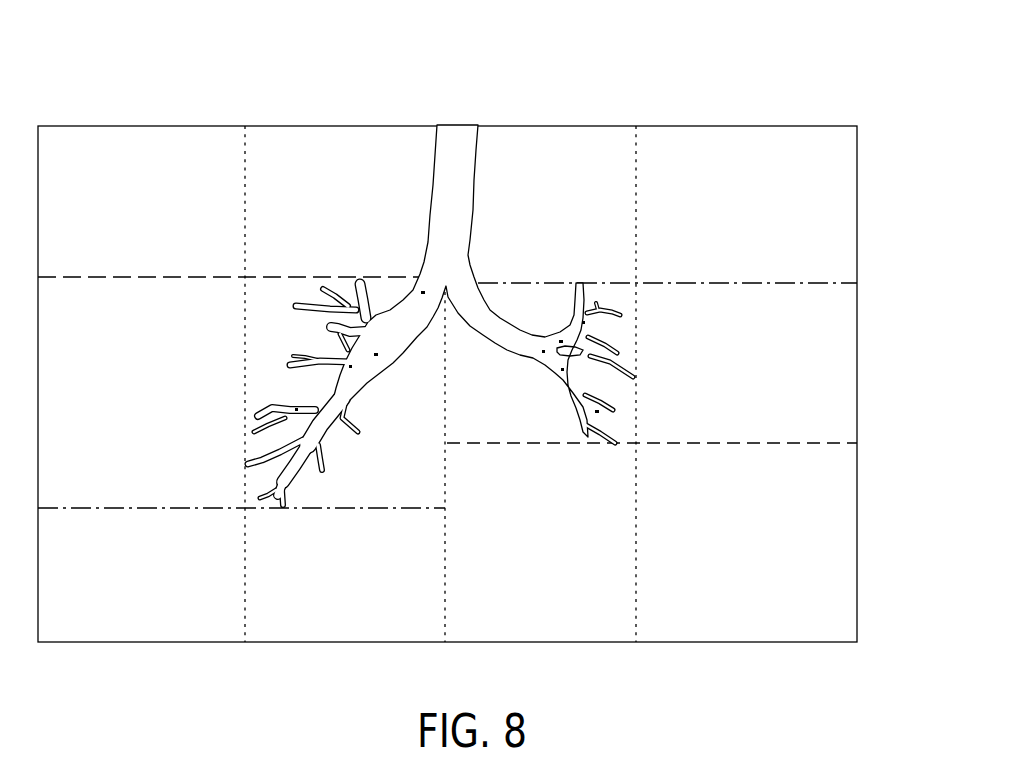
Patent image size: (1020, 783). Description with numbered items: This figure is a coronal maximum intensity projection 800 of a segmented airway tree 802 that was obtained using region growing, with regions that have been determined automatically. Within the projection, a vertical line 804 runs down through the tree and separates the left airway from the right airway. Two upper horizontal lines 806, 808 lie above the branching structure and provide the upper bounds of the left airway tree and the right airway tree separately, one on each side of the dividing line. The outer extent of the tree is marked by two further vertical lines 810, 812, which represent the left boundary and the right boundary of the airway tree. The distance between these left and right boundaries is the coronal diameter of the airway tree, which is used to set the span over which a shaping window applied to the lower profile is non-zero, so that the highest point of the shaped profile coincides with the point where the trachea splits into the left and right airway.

The coronal maximum intensity projection 800 is at (470, 347).
The segmented airway tree 802 is at (458, 140).
The vertical line 804 is at (490, 625).
The upper horizontal line 806 is at (363, 139).
The upper horizontal line 808 is at (838, 192).
The vertical line 810 is at (192, 623).
The vertical line 812 is at (680, 623).